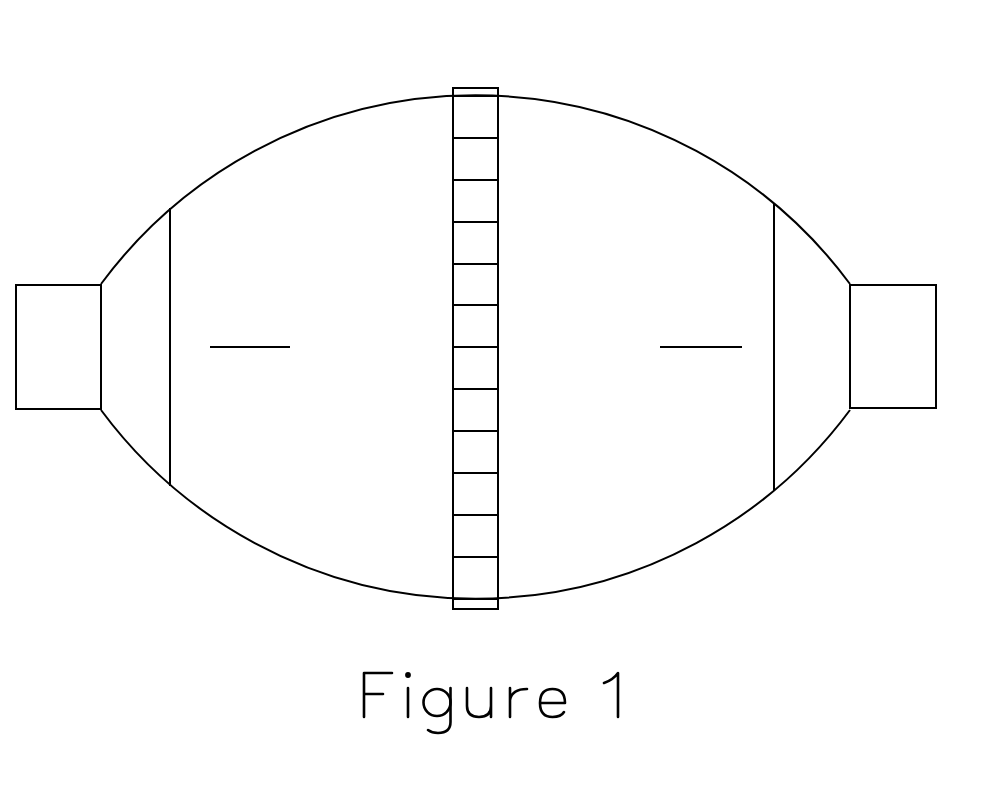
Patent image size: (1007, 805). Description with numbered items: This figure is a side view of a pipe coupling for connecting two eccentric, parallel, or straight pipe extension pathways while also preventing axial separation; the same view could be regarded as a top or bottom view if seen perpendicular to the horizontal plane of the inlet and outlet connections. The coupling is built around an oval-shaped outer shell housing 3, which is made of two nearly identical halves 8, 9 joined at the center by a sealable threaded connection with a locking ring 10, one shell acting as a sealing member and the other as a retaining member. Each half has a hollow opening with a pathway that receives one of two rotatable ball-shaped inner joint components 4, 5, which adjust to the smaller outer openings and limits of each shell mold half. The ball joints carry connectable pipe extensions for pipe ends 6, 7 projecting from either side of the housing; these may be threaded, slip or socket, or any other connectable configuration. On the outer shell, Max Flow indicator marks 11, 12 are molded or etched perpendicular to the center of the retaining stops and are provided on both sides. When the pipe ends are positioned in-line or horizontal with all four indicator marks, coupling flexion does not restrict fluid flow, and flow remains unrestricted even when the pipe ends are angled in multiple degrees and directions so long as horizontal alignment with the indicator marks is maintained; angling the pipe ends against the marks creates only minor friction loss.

The oval-shaped outer shell housing 3 is at (556, 58).
The ball-shaped inner joint component 4 is at (152, 260).
The ball-shaped inner joint component 5 is at (783, 260).
The connectable pipe extension for pipe end 6 is at (40, 375).
The connectable pipe extension for pipe end 7 is at (903, 370).
The outer shell half 8 is at (390, 252).
The outer shell half 9 is at (660, 258).
The locking ring 10 is at (480, 408).
The Max Flow indicator mark 11 is at (232, 352).
The Max Flow indicator mark 12 is at (718, 352).